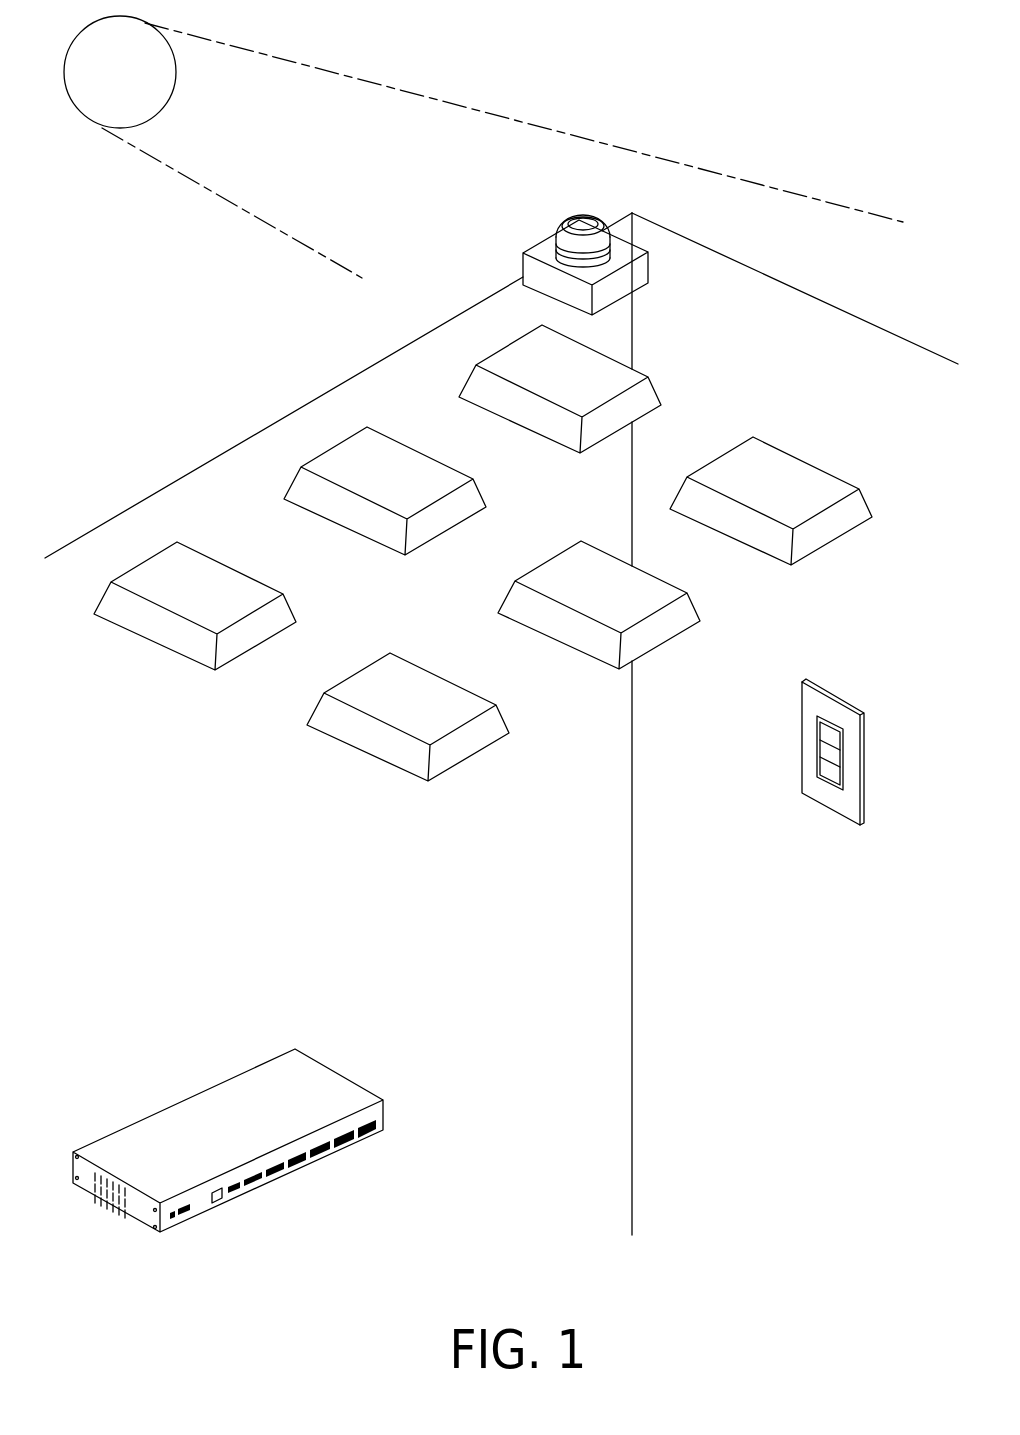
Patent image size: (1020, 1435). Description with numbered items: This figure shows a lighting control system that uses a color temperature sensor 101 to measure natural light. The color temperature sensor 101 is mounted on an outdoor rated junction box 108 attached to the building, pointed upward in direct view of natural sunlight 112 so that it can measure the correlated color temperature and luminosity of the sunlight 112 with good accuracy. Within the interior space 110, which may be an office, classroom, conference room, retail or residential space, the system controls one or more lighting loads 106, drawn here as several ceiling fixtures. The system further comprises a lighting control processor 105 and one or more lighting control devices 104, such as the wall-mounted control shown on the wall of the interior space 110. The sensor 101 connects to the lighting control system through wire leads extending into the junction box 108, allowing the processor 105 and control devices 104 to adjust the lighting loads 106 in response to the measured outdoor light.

The color temperature sensor 101 is at (583, 218).
The lighting control device 104 is at (837, 700).
The lighting control processor 105 is at (205, 1103).
The lighting load 106 is at (193, 660).
The junction box 108 is at (640, 282).
The interior space 110 is at (498, 1023).
The sunlight 112 is at (98, 82).